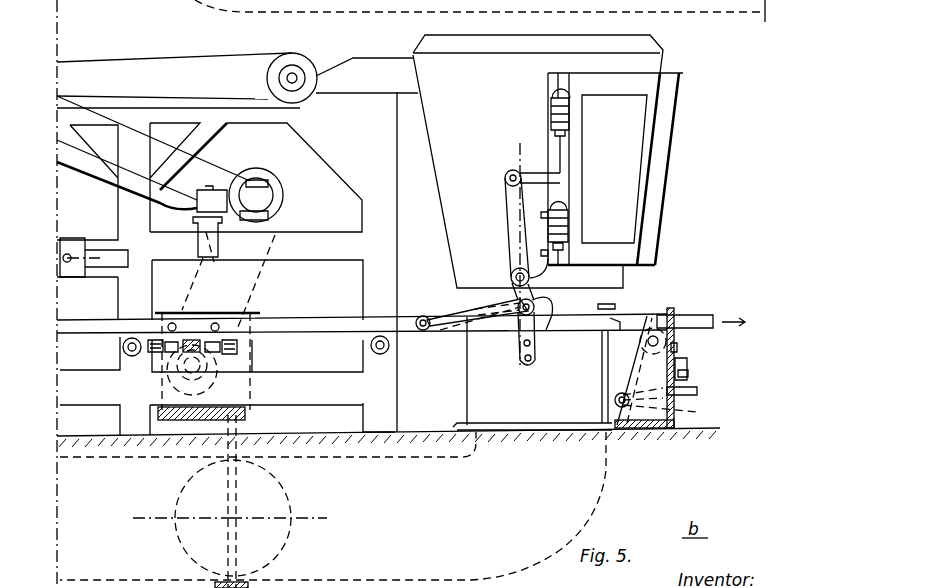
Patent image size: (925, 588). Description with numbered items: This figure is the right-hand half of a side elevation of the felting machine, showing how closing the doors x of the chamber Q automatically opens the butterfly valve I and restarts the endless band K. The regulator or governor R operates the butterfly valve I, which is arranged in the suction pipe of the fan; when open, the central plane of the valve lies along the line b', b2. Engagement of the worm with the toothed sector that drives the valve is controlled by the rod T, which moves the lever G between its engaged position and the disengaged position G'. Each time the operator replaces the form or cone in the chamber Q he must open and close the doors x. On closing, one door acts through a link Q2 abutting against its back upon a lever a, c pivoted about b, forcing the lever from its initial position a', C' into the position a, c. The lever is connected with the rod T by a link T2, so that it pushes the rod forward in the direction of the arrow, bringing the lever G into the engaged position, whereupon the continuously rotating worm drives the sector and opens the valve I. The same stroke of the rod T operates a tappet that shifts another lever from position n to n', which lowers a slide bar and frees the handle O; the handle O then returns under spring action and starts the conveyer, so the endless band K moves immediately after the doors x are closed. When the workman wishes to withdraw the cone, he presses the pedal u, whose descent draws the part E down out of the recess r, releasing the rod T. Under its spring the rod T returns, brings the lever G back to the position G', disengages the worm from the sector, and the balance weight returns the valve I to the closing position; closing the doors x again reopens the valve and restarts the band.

The endless band K is at (199, 51).
The handle O is at (100, 178).
The lever position n' is at (85, 244).
The lever position n is at (97, 258).
The rod T is at (70, 313).
The regulator or governor R is at (236, 310).
The lever position G' is at (157, 324).
The lever G is at (206, 361).
The doors x is at (668, 140).
The chamber Q is at (592, 175).
The link Q2 is at (563, 161).
The lever position a' is at (529, 250).
The lever end a is at (511, 178).
The lever pivot b is at (509, 232).
The lever end c is at (532, 306).
The lever position C' is at (507, 338).
The link T2 is at (457, 313).
The recess r is at (646, 320).
The part E is at (674, 347).
The pedal u is at (688, 374).
The butterfly valve I is at (233, 518).
The valve plane line b' is at (181, 502).
The valve plane line b2 is at (280, 496).